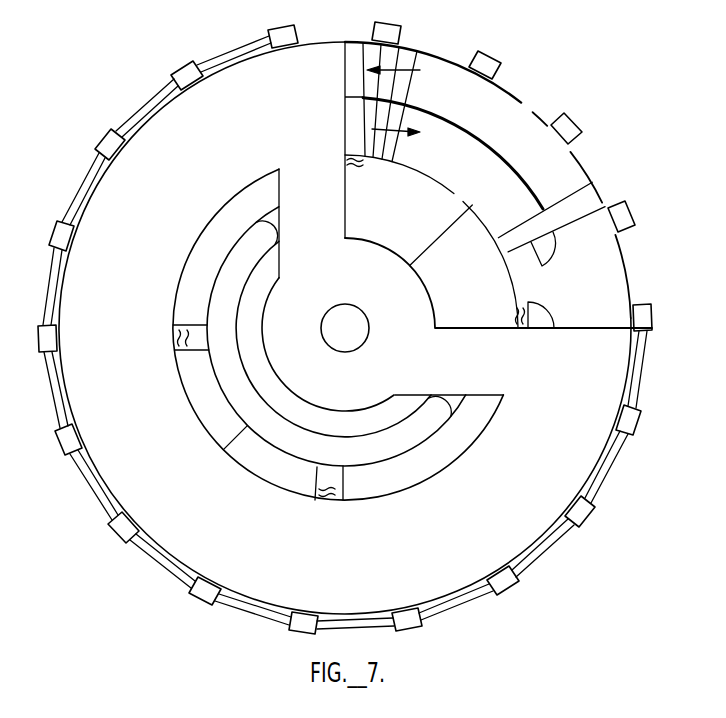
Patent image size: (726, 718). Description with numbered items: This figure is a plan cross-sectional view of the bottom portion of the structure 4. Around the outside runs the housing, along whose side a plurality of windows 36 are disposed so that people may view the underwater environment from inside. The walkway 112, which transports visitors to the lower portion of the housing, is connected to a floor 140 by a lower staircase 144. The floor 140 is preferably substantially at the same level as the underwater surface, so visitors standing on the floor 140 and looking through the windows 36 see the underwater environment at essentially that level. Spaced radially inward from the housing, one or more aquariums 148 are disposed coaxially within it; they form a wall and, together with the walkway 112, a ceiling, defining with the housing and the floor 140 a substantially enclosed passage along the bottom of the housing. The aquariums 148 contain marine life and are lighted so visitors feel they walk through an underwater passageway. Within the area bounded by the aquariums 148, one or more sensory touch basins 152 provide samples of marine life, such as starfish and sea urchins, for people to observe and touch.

The structure 4 is at (100, 558).
The windows 36 is at (627, 448).
The walkway 112 is at (490, 119).
The floor 140 is at (243, 522).
The lower staircase 144 is at (354, 46).
The aquariums 148 is at (197, 412).
The sensory touch basins 152 is at (356, 350).